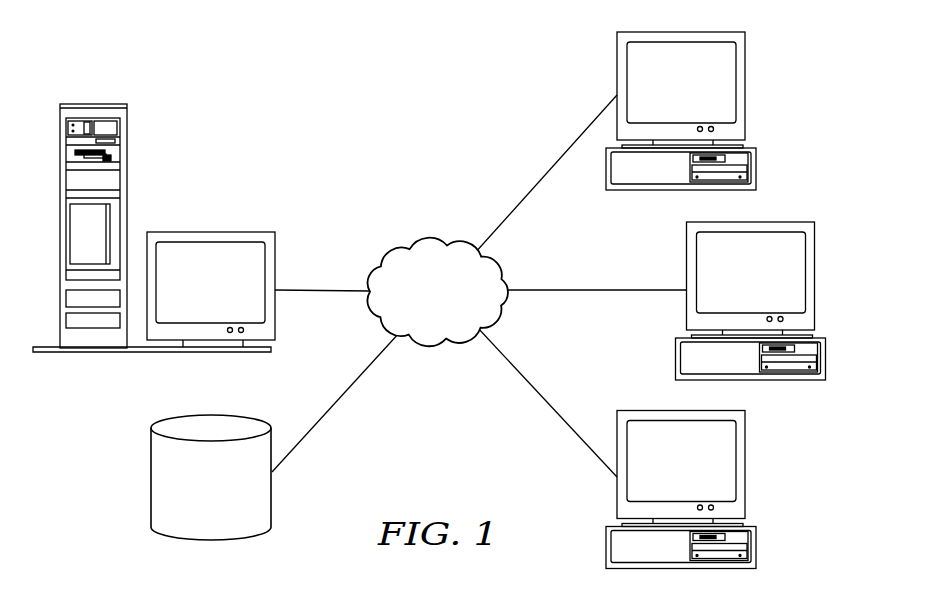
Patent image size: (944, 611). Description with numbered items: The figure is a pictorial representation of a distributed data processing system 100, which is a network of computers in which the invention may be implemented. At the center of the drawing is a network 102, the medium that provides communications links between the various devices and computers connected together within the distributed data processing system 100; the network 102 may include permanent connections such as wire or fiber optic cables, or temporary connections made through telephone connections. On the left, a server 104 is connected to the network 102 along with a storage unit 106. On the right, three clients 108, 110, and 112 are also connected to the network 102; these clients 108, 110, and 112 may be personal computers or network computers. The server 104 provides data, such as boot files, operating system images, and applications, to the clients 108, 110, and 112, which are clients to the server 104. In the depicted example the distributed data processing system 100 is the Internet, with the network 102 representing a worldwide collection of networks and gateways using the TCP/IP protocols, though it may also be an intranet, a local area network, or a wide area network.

The distributed data processing system 100 is at (311, 99).
The network 102 is at (456, 316).
The server 104 is at (228, 294).
The storage unit 106 is at (192, 516).
The client 108 is at (702, 94).
The client 110 is at (772, 284).
The client 112 is at (702, 472).